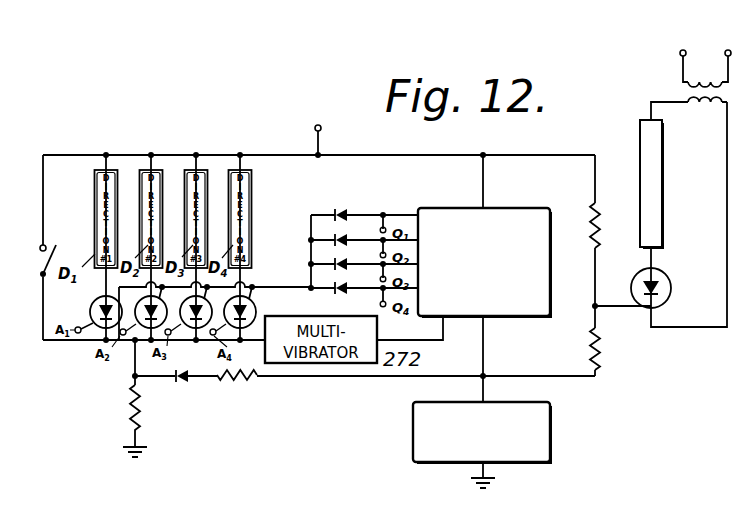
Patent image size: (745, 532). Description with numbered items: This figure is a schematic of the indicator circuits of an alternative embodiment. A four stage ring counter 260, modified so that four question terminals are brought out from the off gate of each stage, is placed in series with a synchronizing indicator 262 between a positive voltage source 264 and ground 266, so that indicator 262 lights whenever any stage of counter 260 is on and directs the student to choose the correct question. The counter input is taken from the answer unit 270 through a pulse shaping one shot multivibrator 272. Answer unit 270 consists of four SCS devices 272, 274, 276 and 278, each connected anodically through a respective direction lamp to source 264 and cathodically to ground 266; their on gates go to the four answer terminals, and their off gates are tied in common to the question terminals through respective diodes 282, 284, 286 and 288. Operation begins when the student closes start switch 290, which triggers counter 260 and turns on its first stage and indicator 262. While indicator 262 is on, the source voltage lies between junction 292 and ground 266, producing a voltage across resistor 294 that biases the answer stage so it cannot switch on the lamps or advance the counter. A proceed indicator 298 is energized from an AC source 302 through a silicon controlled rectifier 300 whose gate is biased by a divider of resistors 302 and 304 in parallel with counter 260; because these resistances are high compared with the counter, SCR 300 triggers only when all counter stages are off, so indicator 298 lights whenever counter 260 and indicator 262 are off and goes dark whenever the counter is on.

The four stage ring counter 260 is at (530, 318).
The synchronizing indicator 262 is at (540, 433).
The positive voltage source 264 is at (315, 129).
The ground 266 is at (150, 447).
The answer unit 270 is at (66, 348).
The one shot multivibrator / SCS device 272 is at (91, 309).
The SCS device 274 is at (133, 374).
The SCS device 276 is at (182, 370).
The SCS device 278 is at (240, 367).
The diode 282 is at (333, 214).
The diode 284 is at (335, 237).
The diode 286 is at (335, 263).
The diode 288 is at (337, 290).
The start switch 290 is at (42, 266).
The junction 292 is at (480, 376).
The resistor 294 is at (130, 412).
The proceed indicator 298 is at (641, 126).
The silicon controlled rectifier 300 is at (672, 292).
The AC source / resistor 302 is at (703, 50).
The resistor 304 is at (600, 355).